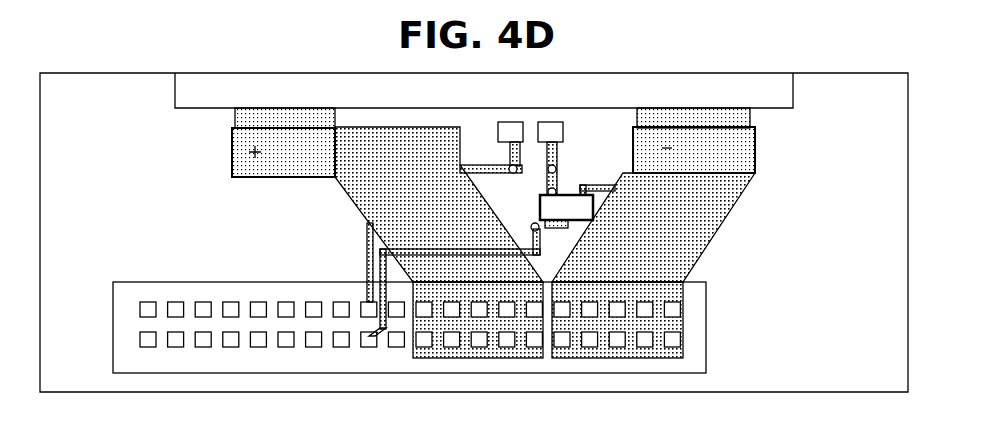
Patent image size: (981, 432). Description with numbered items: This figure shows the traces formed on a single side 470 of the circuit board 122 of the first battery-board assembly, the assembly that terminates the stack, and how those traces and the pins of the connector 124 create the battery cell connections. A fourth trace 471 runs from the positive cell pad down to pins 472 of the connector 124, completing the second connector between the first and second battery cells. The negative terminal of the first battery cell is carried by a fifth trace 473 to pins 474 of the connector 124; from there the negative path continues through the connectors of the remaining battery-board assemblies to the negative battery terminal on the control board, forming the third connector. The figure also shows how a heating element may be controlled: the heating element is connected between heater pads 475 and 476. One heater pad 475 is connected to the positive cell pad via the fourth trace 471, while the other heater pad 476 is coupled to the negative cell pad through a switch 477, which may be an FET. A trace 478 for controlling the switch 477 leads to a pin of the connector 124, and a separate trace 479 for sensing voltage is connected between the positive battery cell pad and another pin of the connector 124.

The circuit board 122 is at (818, 73).
The connector 124 is at (702, 335).
The single side of the circuit board 470 is at (499, 250).
The fourth trace 471 is at (355, 195).
The pins of the connector 472 is at (452, 342).
The fifth trace 473 is at (725, 212).
The pins of the connector 474 is at (588, 342).
The heater pad 475 is at (507, 122).
The heater pad 476 is at (550, 121).
The switch 477 is at (540, 207).
The trace for controlling the switch 478 is at (468, 250).
The trace for sensing voltage 479 is at (367, 262).